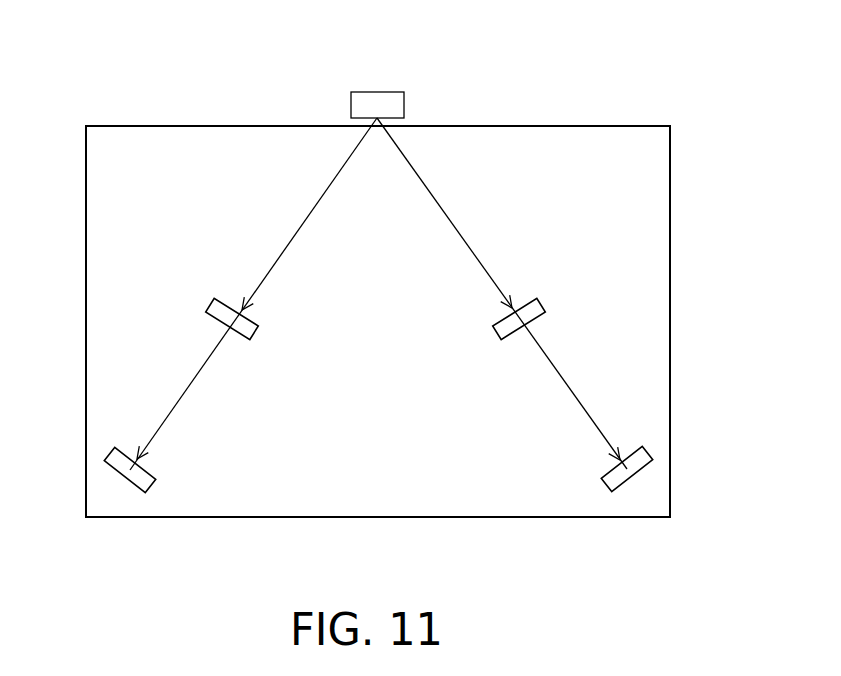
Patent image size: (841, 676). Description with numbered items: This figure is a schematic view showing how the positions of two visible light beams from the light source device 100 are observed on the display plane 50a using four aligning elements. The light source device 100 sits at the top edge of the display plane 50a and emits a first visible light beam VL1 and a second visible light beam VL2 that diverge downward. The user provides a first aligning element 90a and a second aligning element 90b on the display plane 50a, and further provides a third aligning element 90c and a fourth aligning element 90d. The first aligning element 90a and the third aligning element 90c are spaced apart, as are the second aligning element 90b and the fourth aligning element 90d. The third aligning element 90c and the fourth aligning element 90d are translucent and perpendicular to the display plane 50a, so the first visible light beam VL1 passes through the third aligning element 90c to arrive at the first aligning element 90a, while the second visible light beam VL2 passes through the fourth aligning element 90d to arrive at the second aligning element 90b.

The display plane 50a is at (618, 257).
The light source device 100 is at (379, 102).
The first visible light beam VL1 is at (302, 224).
The second visible light beam VL2 is at (452, 224).
The first aligning element 90a is at (130, 470).
The second aligning element 90b is at (626, 469).
The third aligning element 90c is at (208, 308).
The fourth aligning element 90d is at (546, 308).